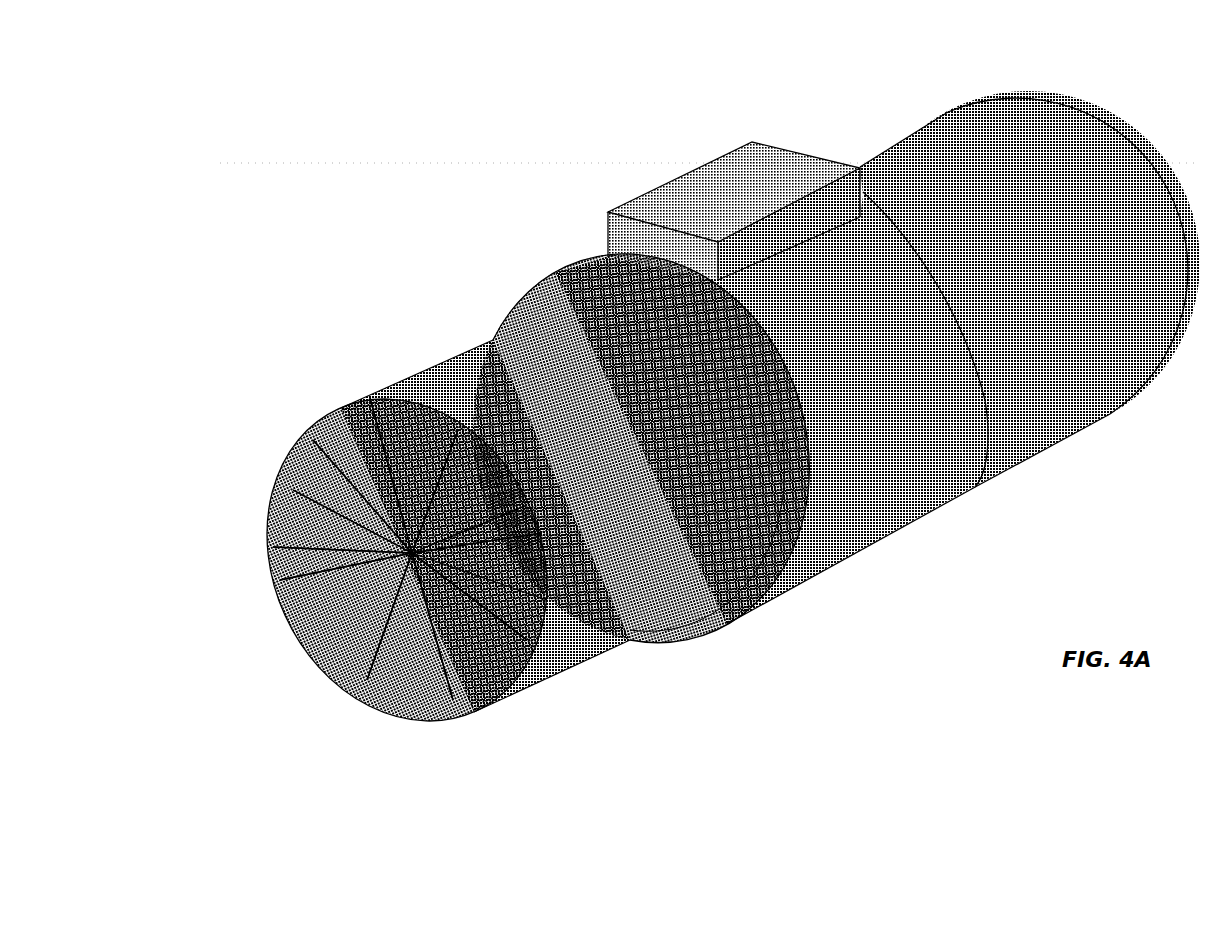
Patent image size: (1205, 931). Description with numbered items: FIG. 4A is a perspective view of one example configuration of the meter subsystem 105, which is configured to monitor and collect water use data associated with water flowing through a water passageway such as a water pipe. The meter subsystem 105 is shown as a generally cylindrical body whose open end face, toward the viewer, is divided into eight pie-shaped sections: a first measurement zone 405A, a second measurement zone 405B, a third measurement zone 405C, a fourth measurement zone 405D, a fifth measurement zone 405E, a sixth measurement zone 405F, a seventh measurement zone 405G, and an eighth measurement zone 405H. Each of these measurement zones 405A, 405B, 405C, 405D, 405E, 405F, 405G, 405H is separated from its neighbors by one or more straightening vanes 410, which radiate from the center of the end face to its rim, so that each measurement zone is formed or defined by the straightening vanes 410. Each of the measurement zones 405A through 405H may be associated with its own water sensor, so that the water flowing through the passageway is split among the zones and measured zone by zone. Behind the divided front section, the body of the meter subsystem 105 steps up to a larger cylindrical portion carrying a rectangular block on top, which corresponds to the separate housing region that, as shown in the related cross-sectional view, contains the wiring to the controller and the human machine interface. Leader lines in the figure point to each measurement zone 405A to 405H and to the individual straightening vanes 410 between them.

The meter subsystem 105 is at (333, 145).
The first measurement zone 405A is at (416, 440).
The second measurement zone 405B is at (496, 492).
The third measurement zone 405C is at (525, 614).
The fourth measurement zone 405D is at (483, 674).
The fifth measurement zone 405E is at (388, 672).
The sixth measurement zone 405F is at (318, 610).
The seventh measurement zone 405G is at (306, 506).
The eighth measurement zone 405H is at (343, 446).
The straightening vane 410 is at (372, 397).